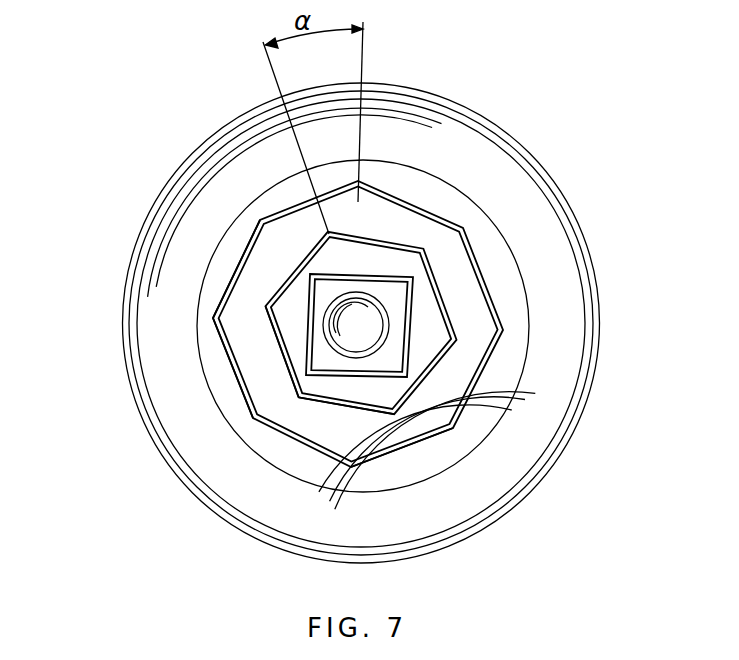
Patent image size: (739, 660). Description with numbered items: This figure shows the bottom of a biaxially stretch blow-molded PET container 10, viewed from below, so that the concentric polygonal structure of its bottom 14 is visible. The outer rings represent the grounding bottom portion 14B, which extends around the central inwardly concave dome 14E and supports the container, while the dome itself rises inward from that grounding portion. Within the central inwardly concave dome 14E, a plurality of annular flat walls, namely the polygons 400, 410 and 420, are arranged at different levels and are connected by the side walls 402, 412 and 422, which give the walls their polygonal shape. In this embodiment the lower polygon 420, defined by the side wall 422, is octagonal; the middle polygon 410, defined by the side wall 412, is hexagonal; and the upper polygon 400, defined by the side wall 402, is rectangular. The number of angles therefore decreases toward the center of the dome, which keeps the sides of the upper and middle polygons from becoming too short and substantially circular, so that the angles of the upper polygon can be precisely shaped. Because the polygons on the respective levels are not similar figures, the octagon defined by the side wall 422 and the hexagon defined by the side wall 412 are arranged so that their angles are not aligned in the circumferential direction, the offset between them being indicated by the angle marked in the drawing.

The container 10 is at (513, 113).
The bottom 14 is at (598, 262).
The grounding bottom portion 14B is at (281, 480).
The central inwardly concave dome 14E is at (485, 271).
The upper polygon 400 is at (400, 354).
The side wall 402 is at (328, 378).
The middle polygon 410 is at (390, 396).
The side wall 412 is at (275, 353).
The lower polygon 420 is at (438, 436).
The side wall 422 is at (215, 326).